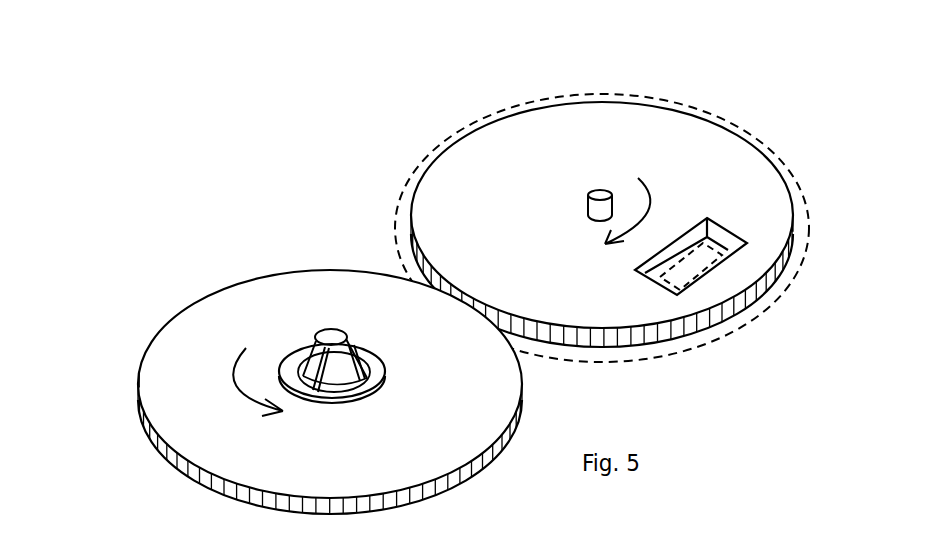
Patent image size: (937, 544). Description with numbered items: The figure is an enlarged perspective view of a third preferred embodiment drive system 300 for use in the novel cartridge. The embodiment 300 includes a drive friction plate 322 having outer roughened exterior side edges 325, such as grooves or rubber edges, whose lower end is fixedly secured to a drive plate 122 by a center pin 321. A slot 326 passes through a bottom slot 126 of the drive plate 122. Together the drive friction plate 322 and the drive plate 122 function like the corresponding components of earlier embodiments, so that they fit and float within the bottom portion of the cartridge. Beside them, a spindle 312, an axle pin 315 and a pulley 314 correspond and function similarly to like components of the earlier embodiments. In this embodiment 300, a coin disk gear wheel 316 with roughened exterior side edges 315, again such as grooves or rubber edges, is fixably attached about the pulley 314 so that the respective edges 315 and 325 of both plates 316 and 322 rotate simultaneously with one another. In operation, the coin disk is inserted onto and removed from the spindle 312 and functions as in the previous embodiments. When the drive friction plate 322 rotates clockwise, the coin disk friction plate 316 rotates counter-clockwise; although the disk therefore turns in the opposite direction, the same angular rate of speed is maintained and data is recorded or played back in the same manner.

The third preferred embodiment drive system 300 is at (201, 102).
The spindle 312 is at (315, 339).
The pulley 314 is at (360, 390).
The roughened exterior side edges 315 is at (338, 337).
The coin disk gear wheel 316 is at (265, 310).
The center pin 321 is at (588, 199).
The drive friction plate 322 is at (655, 128).
The outer roughened exterior side edges 325 is at (563, 332).
The slot 326 is at (718, 232).
The bottom slot 126 is at (703, 272).
The drive plate 122 is at (800, 268).